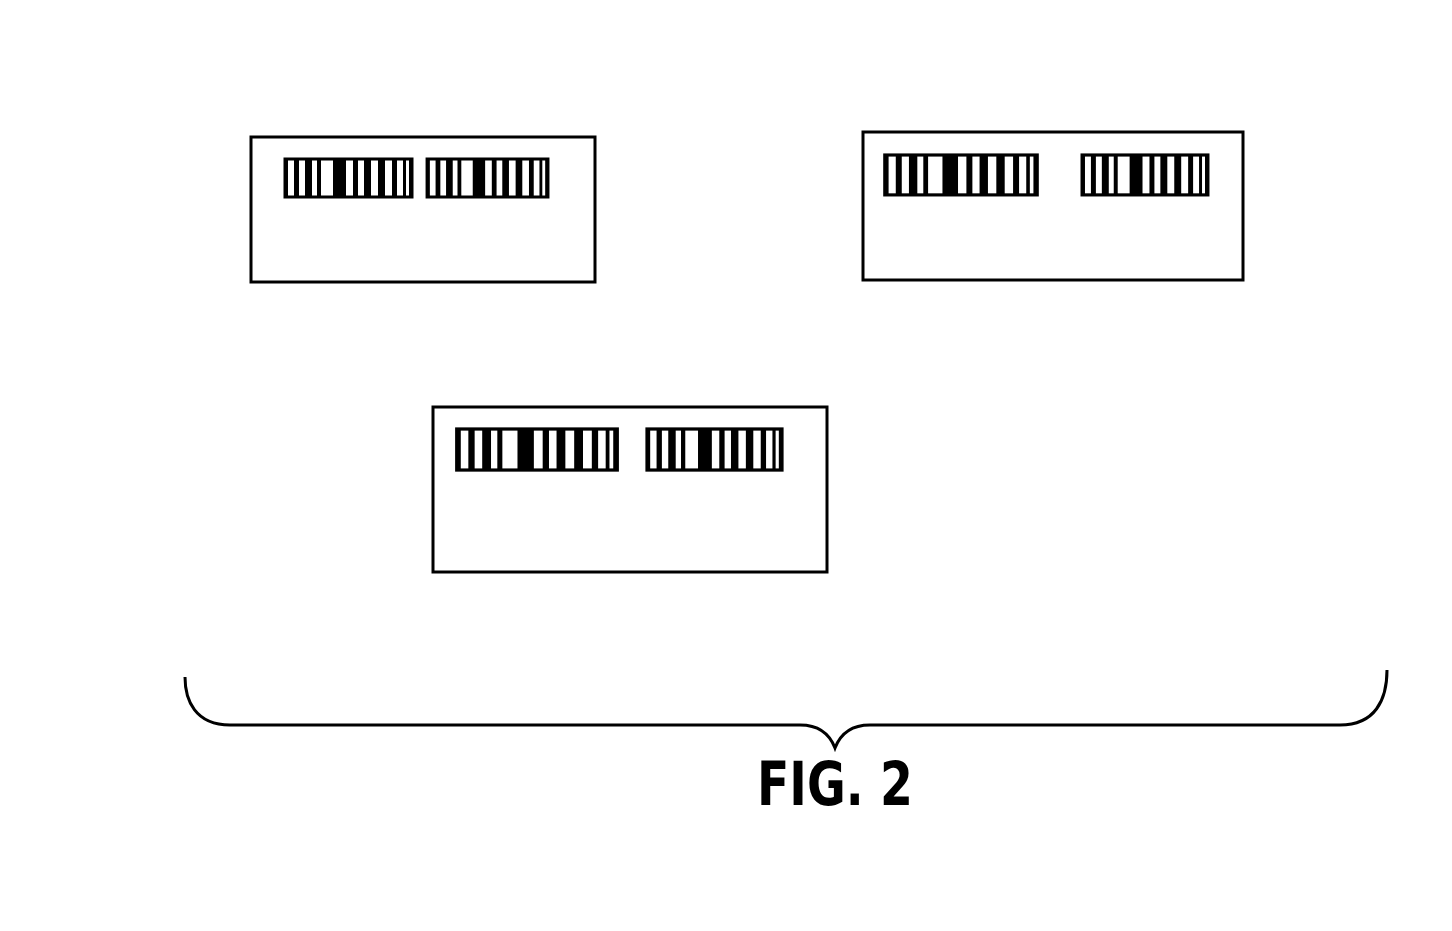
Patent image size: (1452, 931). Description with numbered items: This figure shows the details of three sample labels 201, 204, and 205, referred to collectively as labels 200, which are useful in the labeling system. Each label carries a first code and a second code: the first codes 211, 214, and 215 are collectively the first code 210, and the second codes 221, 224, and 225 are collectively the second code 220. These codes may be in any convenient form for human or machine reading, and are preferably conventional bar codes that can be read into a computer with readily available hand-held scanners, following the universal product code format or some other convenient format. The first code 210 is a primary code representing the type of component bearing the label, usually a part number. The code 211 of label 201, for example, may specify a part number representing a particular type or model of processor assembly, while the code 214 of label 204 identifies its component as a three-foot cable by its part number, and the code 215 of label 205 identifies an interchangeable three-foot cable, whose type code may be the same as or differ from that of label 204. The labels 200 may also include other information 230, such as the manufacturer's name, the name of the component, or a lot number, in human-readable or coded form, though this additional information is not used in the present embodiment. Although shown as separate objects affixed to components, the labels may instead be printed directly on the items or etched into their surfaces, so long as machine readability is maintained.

The labels 200 is at (766, 140).
The first code 210 is at (186, 182).
The label 204 is at (435, 136).
The first code of label 204 214 is at (353, 160).
The second code of label 204 224 is at (513, 160).
The second code 220 is at (1310, 328).
The label 205 is at (970, 132).
The first code of label 205 215 is at (915, 157).
The second code of label 205 225 is at (1120, 157).
The other information 230 is at (626, 600).
The label 201 is at (638, 407).
The first code of label 201 211 is at (532, 430).
The second code of label 201 221 is at (712, 430).